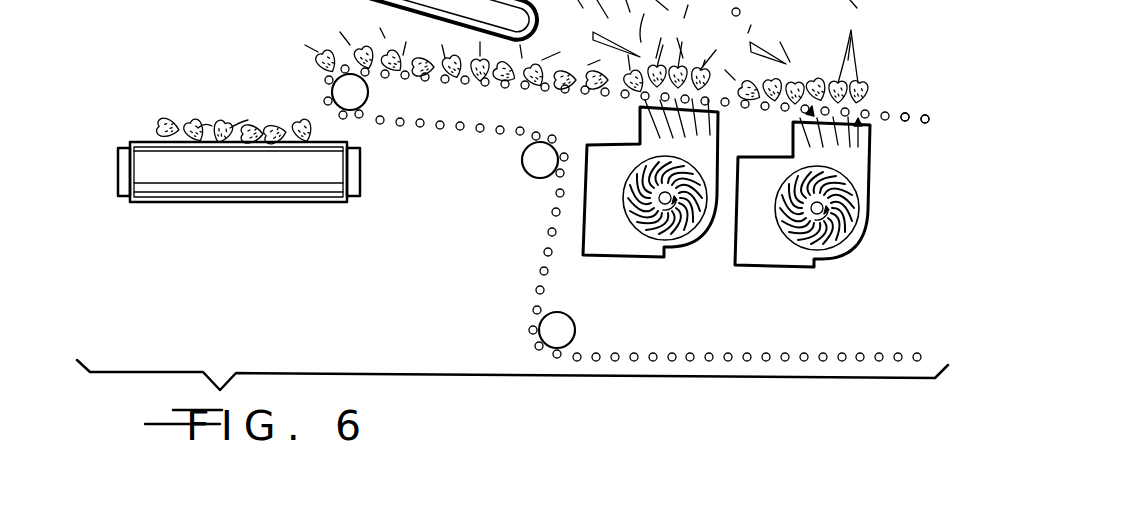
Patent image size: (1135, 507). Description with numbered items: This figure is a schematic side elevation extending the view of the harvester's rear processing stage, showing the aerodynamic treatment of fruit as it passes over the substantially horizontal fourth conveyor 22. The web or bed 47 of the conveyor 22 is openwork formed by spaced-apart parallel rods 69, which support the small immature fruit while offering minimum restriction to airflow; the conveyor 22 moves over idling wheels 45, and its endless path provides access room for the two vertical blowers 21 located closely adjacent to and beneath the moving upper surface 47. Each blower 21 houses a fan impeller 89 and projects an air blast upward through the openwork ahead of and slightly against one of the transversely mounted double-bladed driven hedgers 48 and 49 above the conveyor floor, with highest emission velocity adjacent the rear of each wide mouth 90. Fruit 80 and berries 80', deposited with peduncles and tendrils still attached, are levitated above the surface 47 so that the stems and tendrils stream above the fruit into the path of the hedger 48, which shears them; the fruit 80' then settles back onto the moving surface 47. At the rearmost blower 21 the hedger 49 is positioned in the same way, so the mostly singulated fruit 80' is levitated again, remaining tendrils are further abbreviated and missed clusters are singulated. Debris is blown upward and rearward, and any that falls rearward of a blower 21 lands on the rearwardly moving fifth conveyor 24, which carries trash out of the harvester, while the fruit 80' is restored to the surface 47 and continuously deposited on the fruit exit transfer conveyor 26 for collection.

The vertical blower 21 is at (626, 252).
The fourth conveyor 22 is at (460, 174).
The fifth conveyor 24 is at (432, 3).
The fruit exit transfer conveyor 26 is at (282, 196).
The idling wheels 45 is at (372, 98).
The web or bed 47 is at (927, 110).
The double-bladed driven hedger 48 is at (766, 48).
The double-bladed driven hedger 49 is at (602, 49).
The spaced-apart rods 69 is at (474, 134).
The strawberry 80 is at (567, 66).
The fruit or berries 80' is at (535, 87).
The fan impeller 89 is at (676, 241).
The mouth of the blower 90 is at (648, 113).